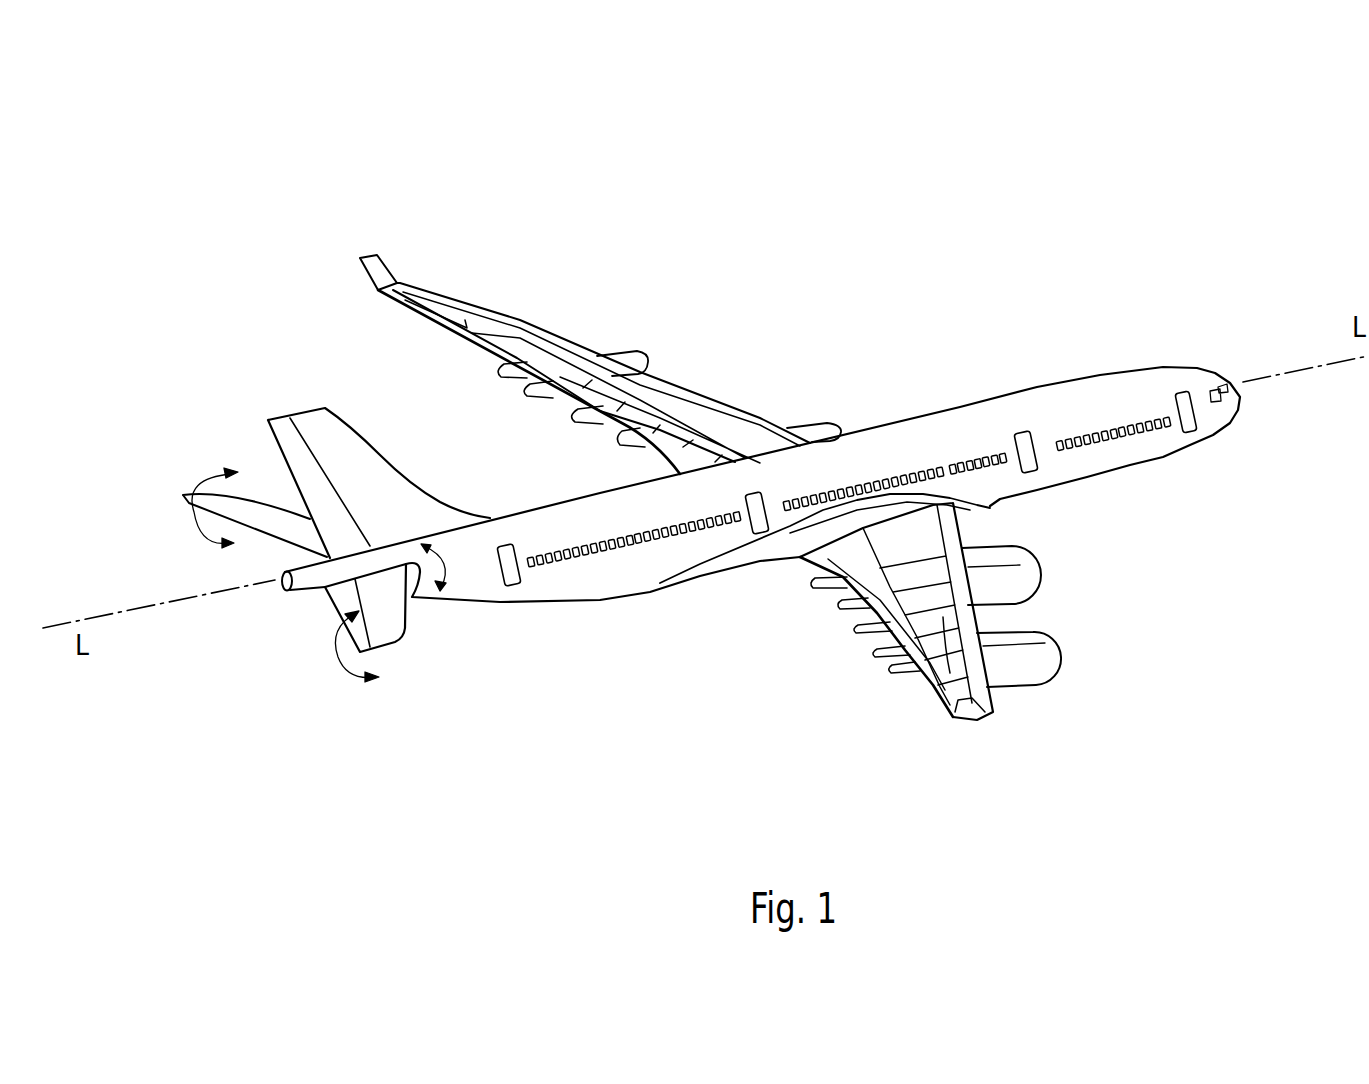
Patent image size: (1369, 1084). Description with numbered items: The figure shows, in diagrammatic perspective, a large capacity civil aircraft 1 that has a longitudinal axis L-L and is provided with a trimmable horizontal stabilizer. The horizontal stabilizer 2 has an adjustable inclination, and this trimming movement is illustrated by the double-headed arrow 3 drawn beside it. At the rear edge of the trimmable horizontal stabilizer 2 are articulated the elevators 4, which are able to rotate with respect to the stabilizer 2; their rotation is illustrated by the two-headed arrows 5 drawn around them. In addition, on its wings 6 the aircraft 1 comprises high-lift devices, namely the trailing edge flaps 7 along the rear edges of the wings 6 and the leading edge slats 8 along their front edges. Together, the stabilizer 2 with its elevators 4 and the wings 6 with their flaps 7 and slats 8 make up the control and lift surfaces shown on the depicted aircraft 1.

The large capacity aircraft 1 is at (858, 289).
The horizontal stabilizer 2 is at (270, 516).
The double-headed arrow 3 is at (442, 565).
The elevators 4 is at (262, 537).
The two-headed arrows 5 is at (187, 512).
The wings 6 is at (697, 413).
The trailing edge flaps 7 is at (582, 400).
The leading edge slats 8 is at (663, 381).